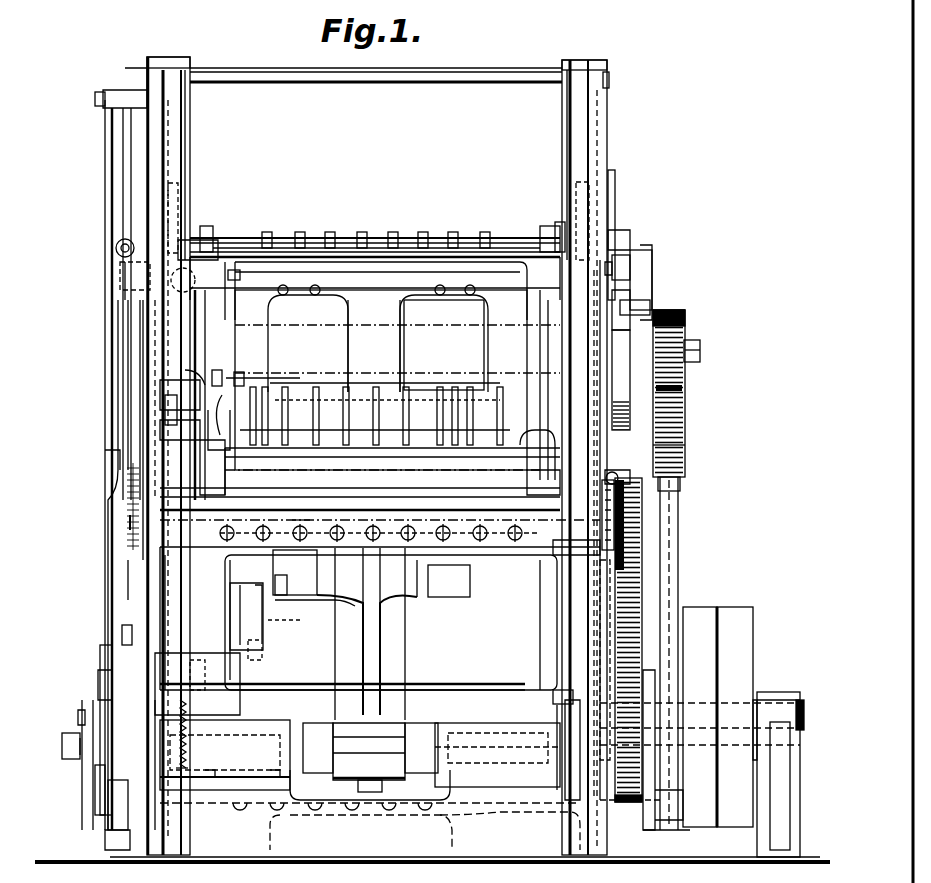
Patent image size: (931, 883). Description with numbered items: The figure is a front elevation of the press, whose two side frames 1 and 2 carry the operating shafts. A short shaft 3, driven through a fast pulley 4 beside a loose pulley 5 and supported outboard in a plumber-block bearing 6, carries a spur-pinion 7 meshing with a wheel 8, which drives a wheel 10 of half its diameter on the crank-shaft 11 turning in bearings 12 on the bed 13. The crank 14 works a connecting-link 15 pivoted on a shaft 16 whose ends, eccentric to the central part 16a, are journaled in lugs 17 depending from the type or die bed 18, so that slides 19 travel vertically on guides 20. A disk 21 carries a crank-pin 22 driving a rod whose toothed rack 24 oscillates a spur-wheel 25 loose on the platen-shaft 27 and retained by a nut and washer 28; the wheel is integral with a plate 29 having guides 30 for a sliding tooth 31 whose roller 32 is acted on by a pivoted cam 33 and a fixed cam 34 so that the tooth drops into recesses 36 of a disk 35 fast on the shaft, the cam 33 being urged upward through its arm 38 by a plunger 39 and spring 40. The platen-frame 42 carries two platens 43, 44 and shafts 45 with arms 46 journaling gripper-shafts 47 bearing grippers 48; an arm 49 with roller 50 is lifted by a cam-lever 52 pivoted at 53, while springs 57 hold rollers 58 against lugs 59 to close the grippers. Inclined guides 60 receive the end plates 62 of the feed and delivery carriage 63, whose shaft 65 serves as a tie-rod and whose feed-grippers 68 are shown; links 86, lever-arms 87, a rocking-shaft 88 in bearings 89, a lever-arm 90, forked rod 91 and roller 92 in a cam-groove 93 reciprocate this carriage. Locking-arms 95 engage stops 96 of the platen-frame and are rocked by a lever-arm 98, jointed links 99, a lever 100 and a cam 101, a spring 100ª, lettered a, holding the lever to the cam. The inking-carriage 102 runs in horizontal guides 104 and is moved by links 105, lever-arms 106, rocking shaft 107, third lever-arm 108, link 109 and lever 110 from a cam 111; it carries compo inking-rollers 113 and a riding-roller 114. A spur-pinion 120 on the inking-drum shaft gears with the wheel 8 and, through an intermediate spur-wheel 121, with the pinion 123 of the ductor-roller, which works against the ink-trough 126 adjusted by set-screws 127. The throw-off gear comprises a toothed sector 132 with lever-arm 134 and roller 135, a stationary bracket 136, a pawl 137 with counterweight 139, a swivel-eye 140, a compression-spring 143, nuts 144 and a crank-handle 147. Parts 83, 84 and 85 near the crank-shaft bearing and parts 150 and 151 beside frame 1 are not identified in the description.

The side frame 1 is at (594, 140).
The side frame 2 is at (170, 198).
The short shaft 3 is at (757, 695).
The fast pulley 4 is at (700, 717).
The loose pulley 5 is at (735, 717).
The plumber-block bearing 6 is at (780, 774).
The spur-pinion 7 is at (618, 705).
The spur-wheel 8 is at (636, 632).
The wheel 10 is at (630, 802).
The crank-shaft 11 is at (68, 745).
The bearings 12 is at (292, 730).
The bed 13 is at (370, 787).
The crank 14 is at (368, 748).
The connecting-link 15 is at (367, 631).
The shaft 16 is at (465, 572).
The central part of shaft 16a is at (320, 598).
The lugs or bearings 17 is at (371, 573).
The type or die bed 18 is at (342, 672).
The slides 19 is at (230, 613).
The guides 20 is at (165, 588).
The disk 21 is at (650, 830).
The crank-pin 22 is at (685, 830).
The toothed rack 24 is at (680, 445).
The spur-wheel 25 is at (688, 318).
The platen-shaft 27 is at (702, 338).
The nut and washer 28 is at (685, 365).
The disk or plate 29 is at (645, 298).
The guides 30 is at (645, 272).
The tooth or pawl 31 is at (648, 250).
The antifriction-roller 32 is at (617, 258).
The cam 33 is at (686, 405).
The cam 34 is at (680, 312).
The disk 35 is at (633, 400).
The recesses 36 is at (299, 416).
The arm 38 is at (680, 470).
The plunger or rod 39 is at (665, 490).
The spring 40 is at (185, 375).
The platen-frame 42 is at (490, 302).
The platen 43 is at (310, 240).
The platen 44 is at (535, 445).
The shafts 45 is at (408, 416).
The arms 46 is at (375, 416).
The gripper-shaft 47 is at (330, 389).
The grippers 48 is at (448, 244).
The arm 49 is at (240, 375).
The antifriction-roller 50 is at (218, 375).
The cam-lever 52 is at (175, 398).
The pivot 53 is at (165, 425).
The spring 57 is at (265, 392).
The antifriction-roller 58 is at (208, 433).
The lug or projection 59 is at (228, 420).
The inclined guides 60 is at (180, 198).
The end plates 62 is at (572, 258).
The feed and delivery carriage 63 is at (302, 240).
The gripper-shaft 65 is at (420, 240).
The feed-grippers 68 is at (362, 238).
The bar 83 is at (560, 722).
The clip 84 is at (555, 695).
The rod 85 is at (560, 708).
The links 86 is at (205, 240).
The lever-arms 87 is at (187, 160).
The rocking-shaft 88 is at (370, 84).
The bearings 89 is at (170, 62).
The lever-arm 90 is at (140, 72).
The forked rod 91 is at (115, 178).
The antifriction-roller 92 is at (90, 700).
The cam-groove 93 is at (100, 775).
The locking-arms 95 is at (230, 275).
The lugs or stops 96 is at (232, 280).
The lever-arm 98 is at (160, 262).
The jointed links 99 is at (125, 270).
The lever 100 is at (130, 540).
The cam 101 is at (110, 652).
The inking-carriage 102 is at (275, 495).
The horizontal guides 104 is at (200, 466).
The links 105 is at (235, 470).
The lever-arms 106 is at (235, 340).
The rocking shaft 107 is at (376, 302).
The third lever-arm 108 is at (125, 292).
The link 109 is at (140, 378).
The lever 110 is at (120, 800).
The cam 111 is at (105, 700).
The compo inking-rollers 113 is at (380, 502).
The riding-roller 114 is at (334, 450).
The spur-pinion 120 is at (622, 482).
The intermediate spur-wheel 121 is at (640, 505).
The pinion 123 is at (600, 540).
The ink-trough 126 is at (338, 545).
The set-screws 127 is at (395, 545).
The toothed sector 132 is at (300, 530).
The lever-arm 134 is at (275, 625).
The antifriction-roller 135 is at (283, 580).
The stationary arm or bracket 136 is at (265, 644).
The pawl or hook 137 is at (255, 585).
The counterweight or weighted arm 139 is at (240, 700).
The swivel-eye 140 is at (185, 715).
The compression-spring 143 is at (160, 725).
The nuts 144 is at (223, 776).
The crank-handle 147 is at (105, 455).
The strip 150 is at (614, 195).
The clip 151 is at (612, 245).
The spring a is at (130, 522).